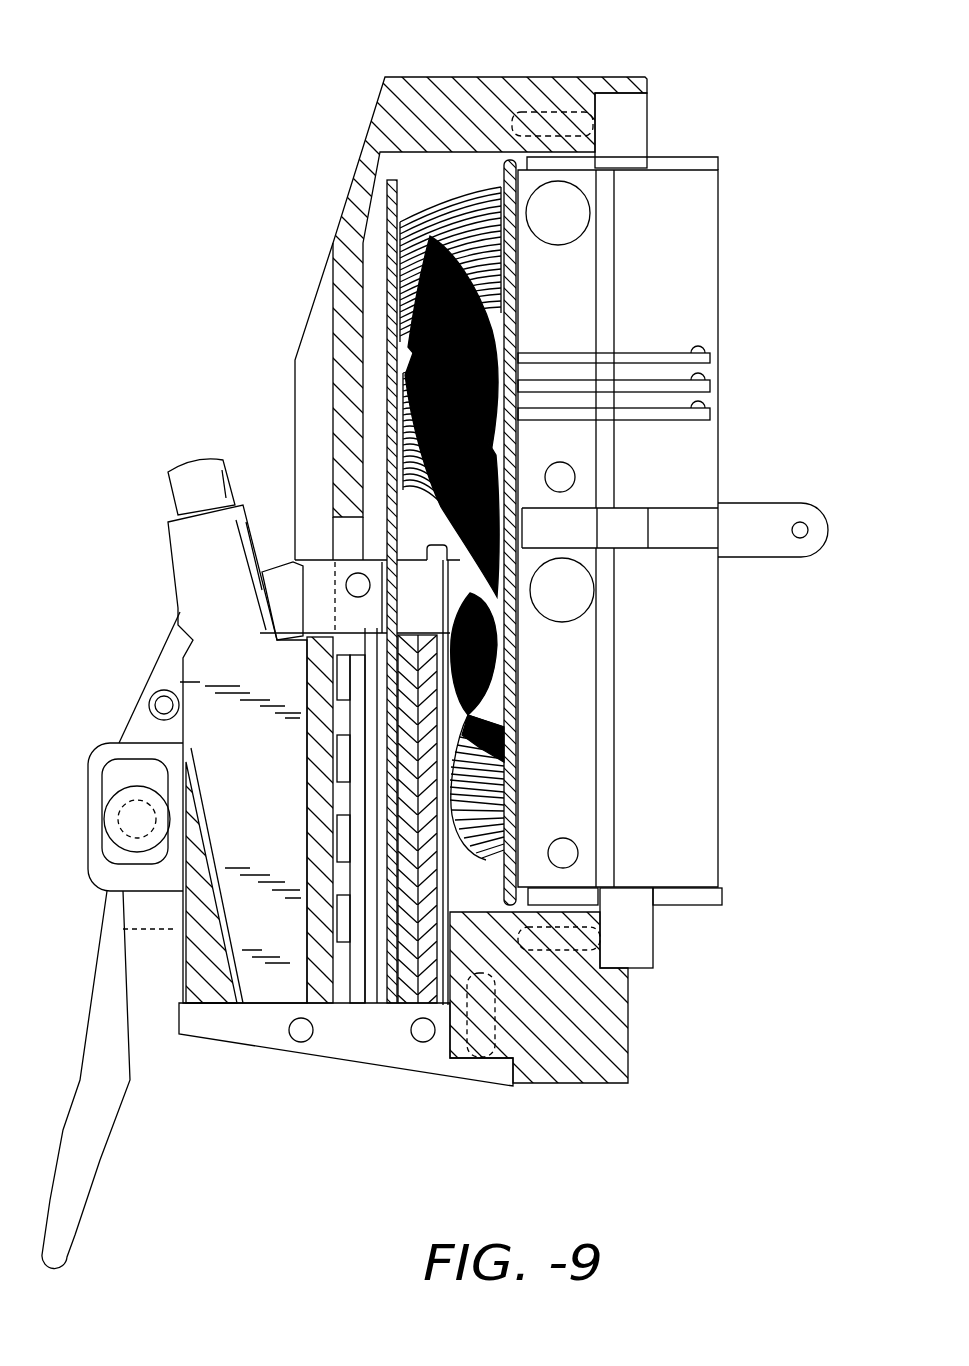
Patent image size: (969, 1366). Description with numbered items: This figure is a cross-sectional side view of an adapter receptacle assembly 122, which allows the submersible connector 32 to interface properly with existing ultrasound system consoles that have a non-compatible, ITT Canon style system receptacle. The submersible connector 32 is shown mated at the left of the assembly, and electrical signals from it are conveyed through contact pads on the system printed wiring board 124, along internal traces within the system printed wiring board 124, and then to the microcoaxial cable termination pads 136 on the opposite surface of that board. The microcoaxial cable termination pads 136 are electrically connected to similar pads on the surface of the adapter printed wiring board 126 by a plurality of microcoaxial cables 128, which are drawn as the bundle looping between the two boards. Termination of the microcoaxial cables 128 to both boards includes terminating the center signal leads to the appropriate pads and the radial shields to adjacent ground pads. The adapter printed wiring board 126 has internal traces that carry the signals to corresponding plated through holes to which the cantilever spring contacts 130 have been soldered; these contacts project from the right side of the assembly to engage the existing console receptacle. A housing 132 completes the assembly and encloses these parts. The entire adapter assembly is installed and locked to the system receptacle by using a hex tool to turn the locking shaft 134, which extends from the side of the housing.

The housing 132 is at (548, 100).
The system printed wiring board 124 is at (388, 187).
The microcoaxial cable termination pads 136 is at (390, 267).
The microcoaxial cables 128 is at (510, 287).
The cantilever spring contacts 130 is at (700, 405).
The locking shaft 134 is at (780, 503).
The adapter printed wiring board 126 is at (520, 752).
The submersible connector 32 is at (253, 827).
The adapter receptacle assembly 122 is at (245, 1218).